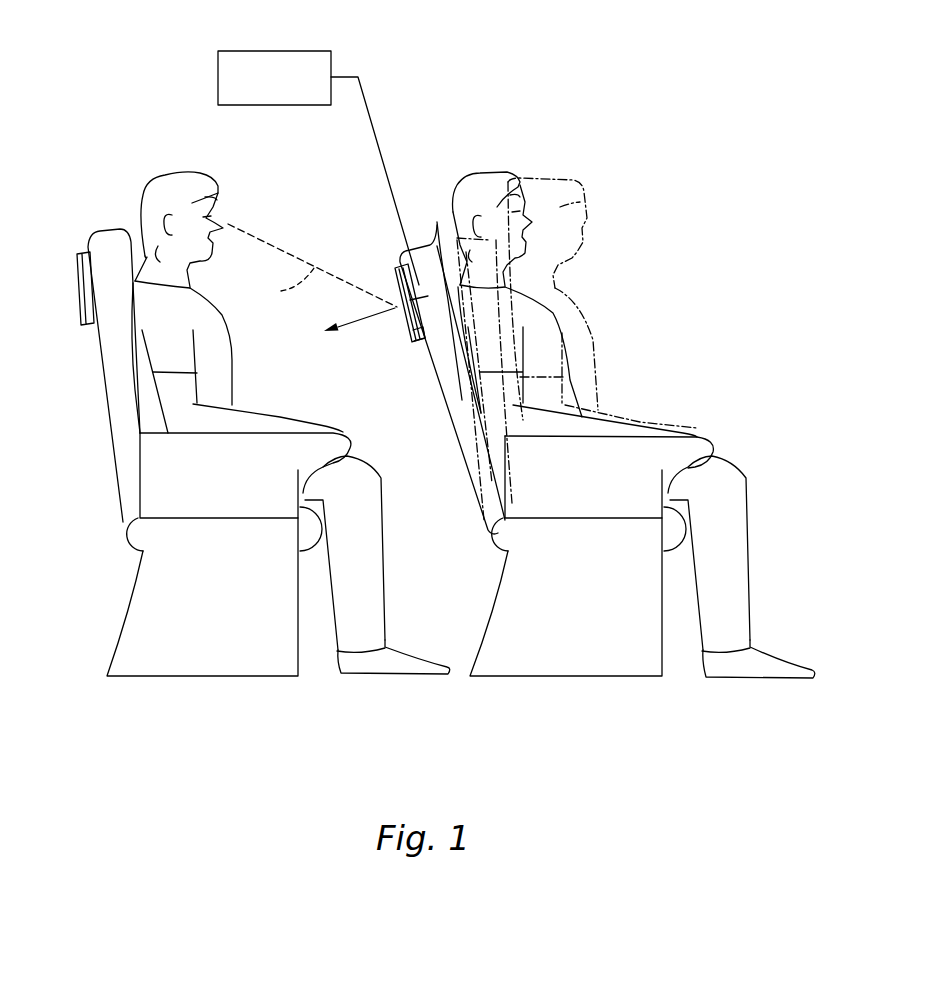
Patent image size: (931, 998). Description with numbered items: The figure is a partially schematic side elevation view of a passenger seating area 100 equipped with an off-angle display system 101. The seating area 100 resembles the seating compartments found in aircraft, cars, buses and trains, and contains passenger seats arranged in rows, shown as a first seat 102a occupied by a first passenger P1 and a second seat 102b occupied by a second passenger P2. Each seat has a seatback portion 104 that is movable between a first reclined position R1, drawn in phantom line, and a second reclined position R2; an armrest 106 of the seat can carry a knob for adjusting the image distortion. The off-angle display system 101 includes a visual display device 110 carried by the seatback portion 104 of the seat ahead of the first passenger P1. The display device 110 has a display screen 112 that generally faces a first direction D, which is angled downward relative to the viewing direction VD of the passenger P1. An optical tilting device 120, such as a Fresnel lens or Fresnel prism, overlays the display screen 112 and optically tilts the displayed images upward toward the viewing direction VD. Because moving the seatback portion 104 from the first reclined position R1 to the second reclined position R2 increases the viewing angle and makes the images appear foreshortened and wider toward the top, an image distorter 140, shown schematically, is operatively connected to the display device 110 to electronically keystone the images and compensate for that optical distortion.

The passenger seating area 100 is at (710, 255).
The off-angle display system 101 is at (319, 249).
The first seat 102a is at (105, 240).
The second seat 102b is at (417, 253).
The seatback portion 104 is at (437, 222).
The armrest 106 is at (216, 476).
The visual display device 110 is at (400, 264).
The display screen 112 is at (418, 343).
The optical tilting device 120 is at (397, 272).
The image distorter 140 is at (257, 50).
The first passenger P1 is at (180, 175).
The second passenger P2 is at (495, 176).
The first reclined position R1 is at (470, 407).
The second reclined position R2 is at (466, 455).
The viewing direction VD is at (283, 285).
The first direction D is at (377, 318).